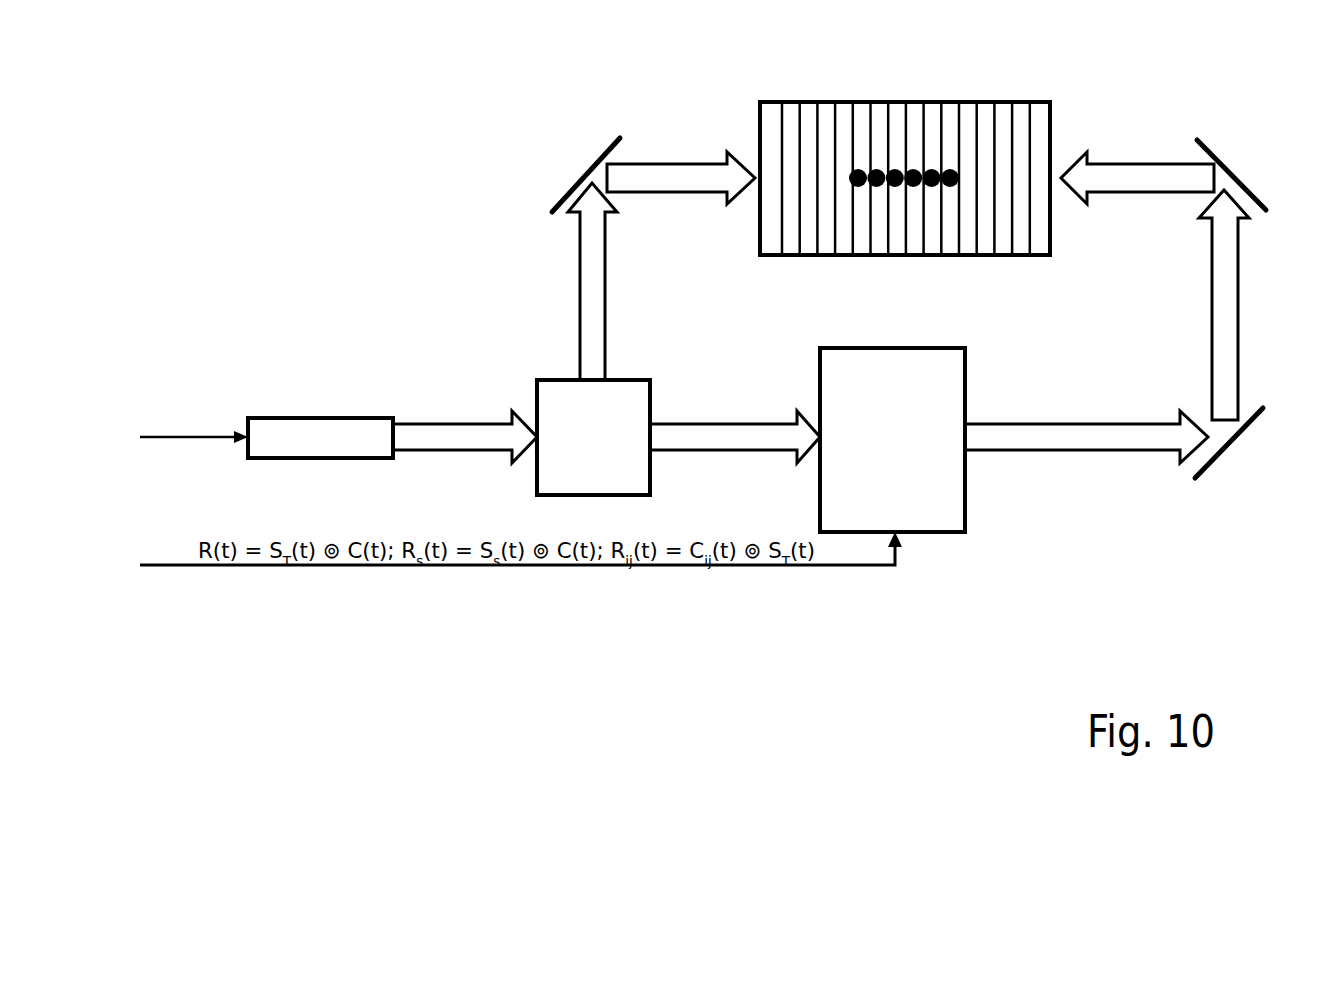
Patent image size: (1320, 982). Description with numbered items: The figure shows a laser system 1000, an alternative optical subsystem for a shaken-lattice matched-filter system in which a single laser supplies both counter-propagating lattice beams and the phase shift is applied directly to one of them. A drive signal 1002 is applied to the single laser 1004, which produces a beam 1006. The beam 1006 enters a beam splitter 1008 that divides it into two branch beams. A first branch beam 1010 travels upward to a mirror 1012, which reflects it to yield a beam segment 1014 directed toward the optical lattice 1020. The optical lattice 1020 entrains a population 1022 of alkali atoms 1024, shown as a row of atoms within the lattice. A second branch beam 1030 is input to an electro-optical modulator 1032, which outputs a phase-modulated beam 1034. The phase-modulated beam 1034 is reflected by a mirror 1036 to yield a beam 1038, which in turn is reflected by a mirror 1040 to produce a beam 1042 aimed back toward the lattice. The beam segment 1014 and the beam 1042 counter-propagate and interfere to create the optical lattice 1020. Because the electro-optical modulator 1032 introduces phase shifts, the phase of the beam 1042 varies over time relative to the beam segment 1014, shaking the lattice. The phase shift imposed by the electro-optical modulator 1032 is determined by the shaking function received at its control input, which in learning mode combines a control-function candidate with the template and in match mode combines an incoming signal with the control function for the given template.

The laser system 1000 is at (616, 44).
The drive signal 1002 is at (175, 424).
The laser 1004 is at (320, 438).
The beam 1006 is at (465, 437).
The beam splitter 1008 is at (593, 437).
The first branch beam 1010 is at (626, 281).
The mirror 1012 is at (568, 187).
The beam segment 1014 is at (681, 178).
The optical lattice 1020 is at (1002, 102).
The population 1022 is at (838, 177).
The alkali atoms 1024 is at (937, 168).
The second branch beam 1030 is at (735, 437).
The electro-optical modulator 1032 is at (892, 440).
The phase-modulated beam 1034 is at (1086, 437).
The mirror 1036 is at (1223, 457).
The beam 1038 is at (1255, 305).
The mirror 1040 is at (1230, 156).
The beam 1042 is at (1137, 178).